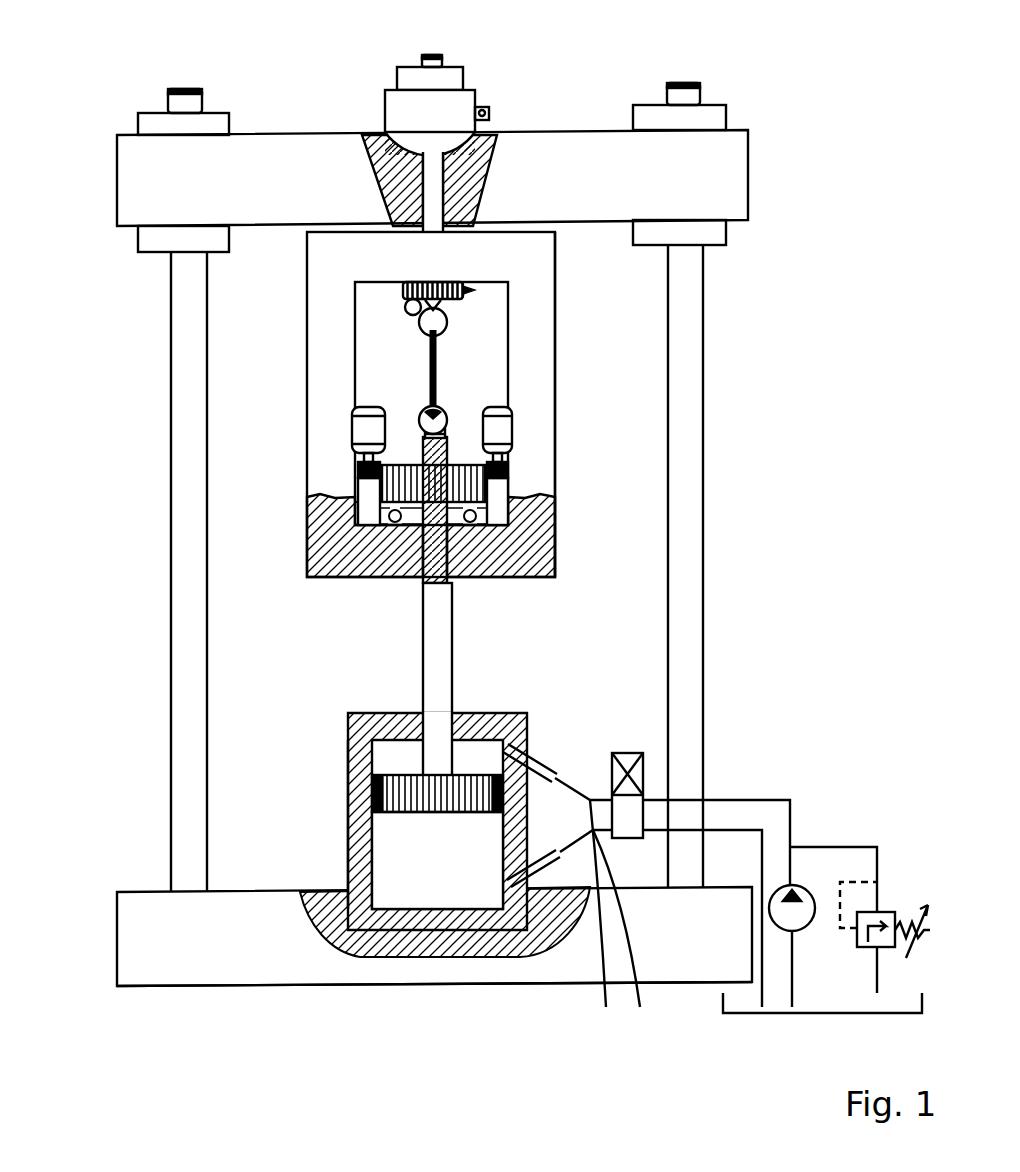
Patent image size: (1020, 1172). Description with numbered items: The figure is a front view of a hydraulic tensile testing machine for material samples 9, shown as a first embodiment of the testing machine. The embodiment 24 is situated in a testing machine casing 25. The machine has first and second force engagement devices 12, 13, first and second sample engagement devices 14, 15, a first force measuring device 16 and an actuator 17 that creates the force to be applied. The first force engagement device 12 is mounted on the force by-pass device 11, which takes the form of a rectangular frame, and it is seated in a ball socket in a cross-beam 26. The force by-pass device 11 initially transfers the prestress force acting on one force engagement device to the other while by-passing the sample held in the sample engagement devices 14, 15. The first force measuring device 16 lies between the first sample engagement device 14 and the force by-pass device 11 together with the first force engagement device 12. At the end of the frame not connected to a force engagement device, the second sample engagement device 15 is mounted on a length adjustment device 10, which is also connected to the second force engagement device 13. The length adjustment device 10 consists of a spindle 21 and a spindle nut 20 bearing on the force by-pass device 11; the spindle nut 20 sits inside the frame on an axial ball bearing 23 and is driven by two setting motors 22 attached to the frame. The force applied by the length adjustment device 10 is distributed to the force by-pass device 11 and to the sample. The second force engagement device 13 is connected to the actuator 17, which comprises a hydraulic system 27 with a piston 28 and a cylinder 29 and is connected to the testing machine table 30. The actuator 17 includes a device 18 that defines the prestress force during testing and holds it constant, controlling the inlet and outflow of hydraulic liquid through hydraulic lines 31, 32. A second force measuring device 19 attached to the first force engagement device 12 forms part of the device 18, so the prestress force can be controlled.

The material sample 9 is at (428, 362).
The length adjustment device 10 is at (450, 404).
The force by-pass device 11 is at (538, 460).
The first force engagement device 12 is at (445, 142).
The second force engagement device 13 is at (445, 625).
The first sample engagement device 14 is at (440, 276).
The second sample engagement device 15 is at (460, 427).
The first force measuring device 16 is at (478, 289).
The actuator 17 is at (360, 733).
The prestress force defining device 18 is at (877, 912).
The second force measuring device 19 is at (400, 100).
The spindle nut 20 is at (330, 548).
The spindle 21 is at (330, 566).
The setting motors 22 is at (360, 437).
The axial ball bearing 23 is at (330, 514).
The embodiment 24 is at (618, 532).
The testing machine casing 25 is at (135, 940).
The cross-beam 26 is at (145, 191).
The hydraulic system 27 is at (348, 850).
The piston 28 is at (417, 790).
The cylinder 29 is at (363, 820).
The testing machine table 30 is at (251, 968).
The hydraulic line 31 is at (690, 892).
The hydraulic line 32 is at (634, 935).